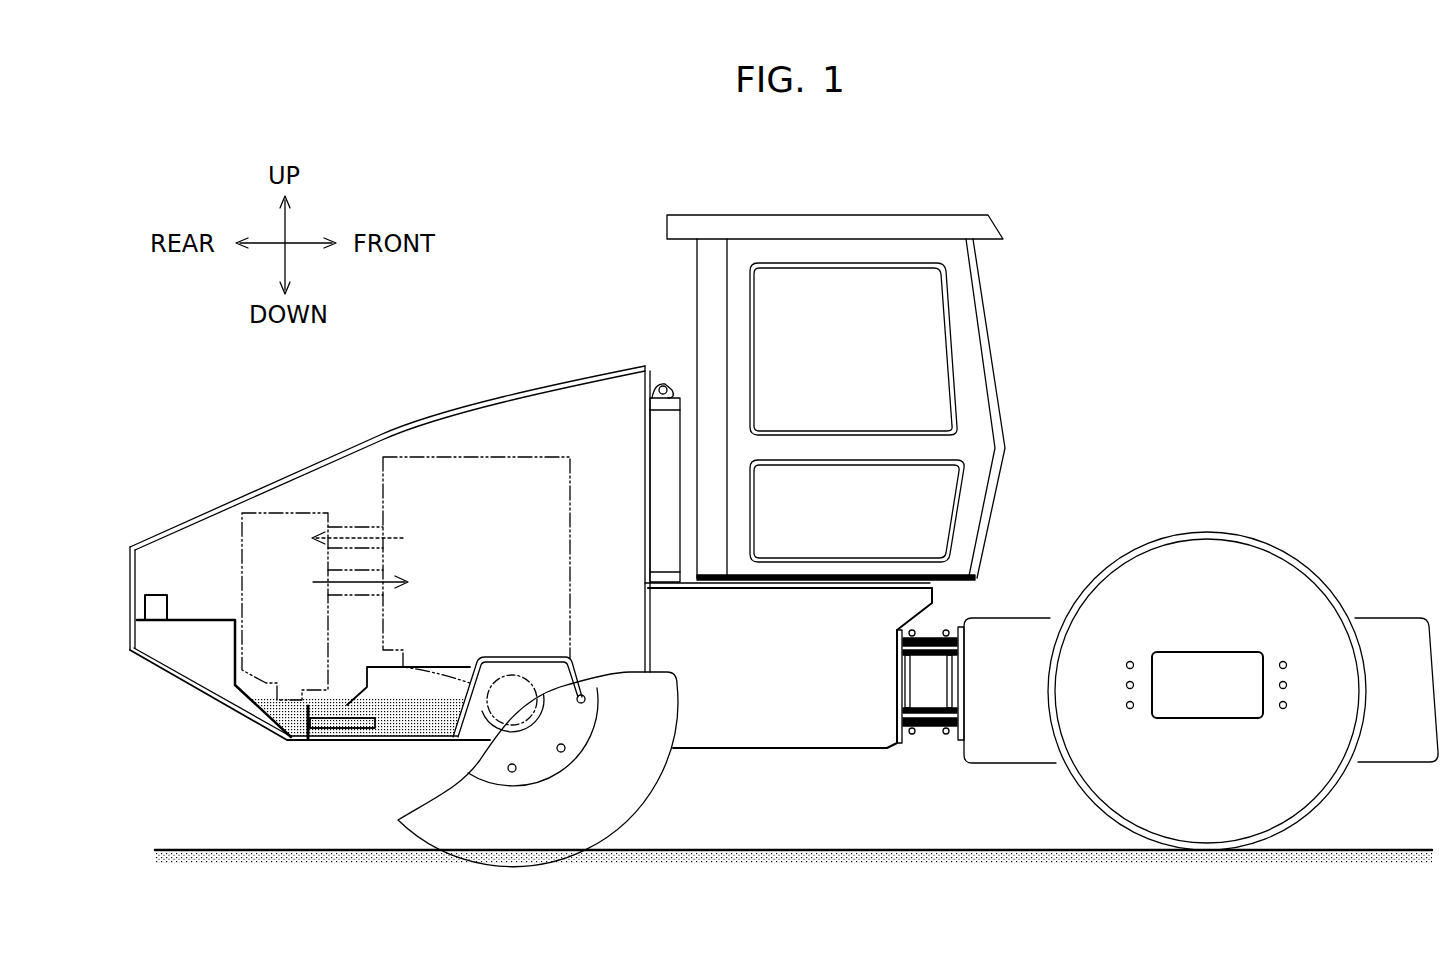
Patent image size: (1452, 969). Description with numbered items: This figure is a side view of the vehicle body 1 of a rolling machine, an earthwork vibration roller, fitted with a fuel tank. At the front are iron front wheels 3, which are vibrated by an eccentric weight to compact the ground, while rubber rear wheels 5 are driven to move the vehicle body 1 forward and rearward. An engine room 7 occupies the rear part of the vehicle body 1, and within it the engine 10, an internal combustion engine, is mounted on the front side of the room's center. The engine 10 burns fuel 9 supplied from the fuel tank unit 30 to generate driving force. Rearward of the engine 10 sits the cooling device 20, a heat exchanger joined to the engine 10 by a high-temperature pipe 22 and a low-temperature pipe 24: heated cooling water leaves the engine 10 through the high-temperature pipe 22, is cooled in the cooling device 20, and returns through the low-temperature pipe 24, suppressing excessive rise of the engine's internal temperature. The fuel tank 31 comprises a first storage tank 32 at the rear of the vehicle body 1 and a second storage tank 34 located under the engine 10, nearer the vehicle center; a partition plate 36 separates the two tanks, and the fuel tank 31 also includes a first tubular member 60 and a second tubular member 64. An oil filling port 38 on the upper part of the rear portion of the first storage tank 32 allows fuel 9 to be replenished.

The vehicle body 1 is at (1208, 312).
The front wheels 3 is at (1232, 547).
The rear wheels 5 is at (628, 796).
The engine room 7 is at (432, 406).
The fuel 9 is at (262, 726).
The engine 10 is at (548, 452).
The cooling device 20 is at (290, 505).
The high-temperature pipe 22 is at (357, 526).
The low-temperature pipe 24 is at (352, 597).
The fuel tank unit 30 is at (213, 550).
The fuel tank 31 is at (195, 617).
The first storage tank 32 is at (222, 698).
The second storage tank 34 is at (398, 740).
The partition plate 36 is at (308, 741).
The oil filling port 38 is at (156, 592).
The first tubular member 60 is at (350, 730).
The second tubular member 64 is at (350, 730).